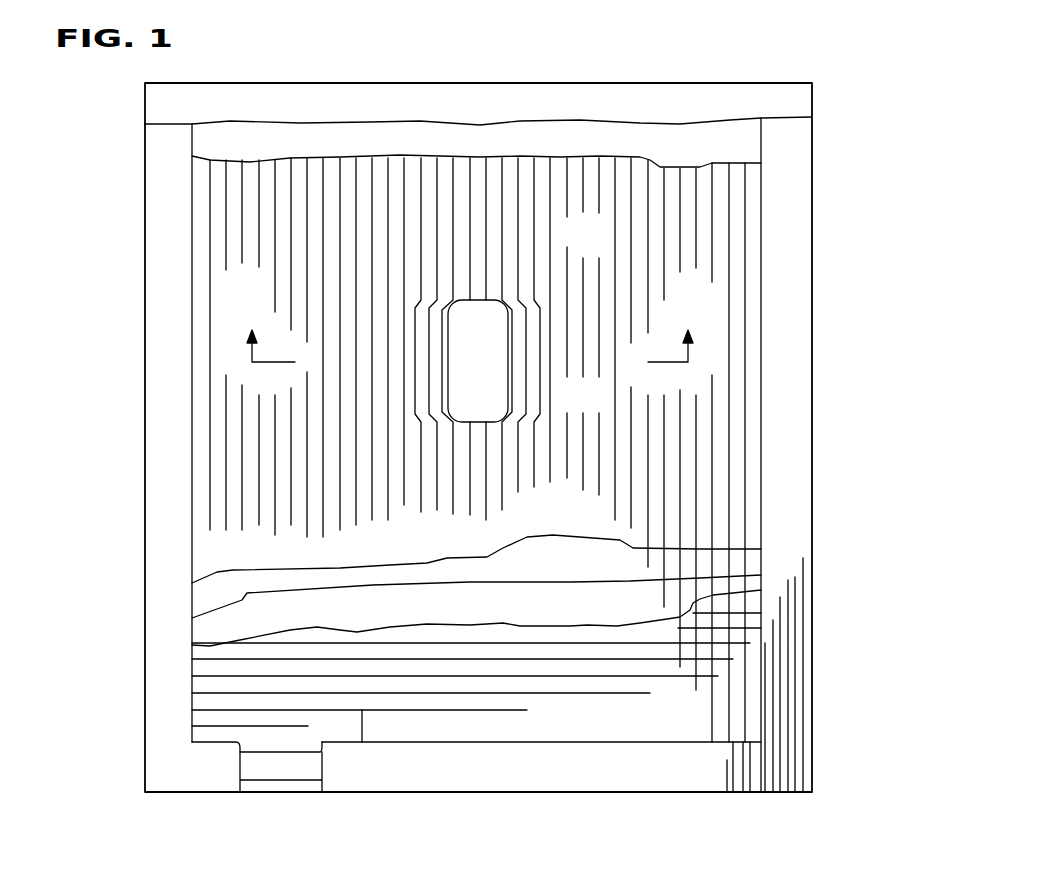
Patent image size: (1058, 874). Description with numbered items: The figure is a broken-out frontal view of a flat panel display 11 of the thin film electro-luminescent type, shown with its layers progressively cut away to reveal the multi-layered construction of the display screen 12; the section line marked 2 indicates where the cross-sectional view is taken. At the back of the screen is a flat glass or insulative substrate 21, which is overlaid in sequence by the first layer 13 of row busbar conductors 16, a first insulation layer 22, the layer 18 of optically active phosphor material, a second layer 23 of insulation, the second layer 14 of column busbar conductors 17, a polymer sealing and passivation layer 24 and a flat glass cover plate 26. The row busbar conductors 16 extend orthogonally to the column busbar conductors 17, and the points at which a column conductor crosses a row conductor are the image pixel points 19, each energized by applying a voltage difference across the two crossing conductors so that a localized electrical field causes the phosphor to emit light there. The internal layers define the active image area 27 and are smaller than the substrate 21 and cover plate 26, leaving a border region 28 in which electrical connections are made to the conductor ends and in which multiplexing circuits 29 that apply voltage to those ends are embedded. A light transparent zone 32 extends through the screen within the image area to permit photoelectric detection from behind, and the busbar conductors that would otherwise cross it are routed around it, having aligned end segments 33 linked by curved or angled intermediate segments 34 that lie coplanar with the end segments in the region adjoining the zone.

The section line 2- 2 is at (471, 331).
The flat panel display 11 is at (826, 122).
The display screen 12 is at (814, 427).
The first layer of busbar conductors 13 is at (567, 700).
The second layer of busbar conductors 14 is at (557, 483).
The row busbar conductors 16 is at (361, 757).
The column busbar conductors 17 is at (730, 187).
The layer of optically active material 18 is at (548, 579).
The image pixel points 19 is at (691, 681).
The substrate 21 is at (677, 727).
The first insulation layer 22 is at (604, 618).
The second layer of insulation 23 is at (401, 557).
The polymer sealing and passivation layer 24 is at (274, 155).
The cover plate 26 is at (336, 115).
The active image area 27 is at (763, 299).
The border region 28 is at (400, 765).
The multiplexing circuits 29 is at (263, 768).
The light transparent zones 32 is at (493, 361).
The aligned end segments 33 is at (535, 228).
The curved or angled intermediate segments 34 is at (539, 388).